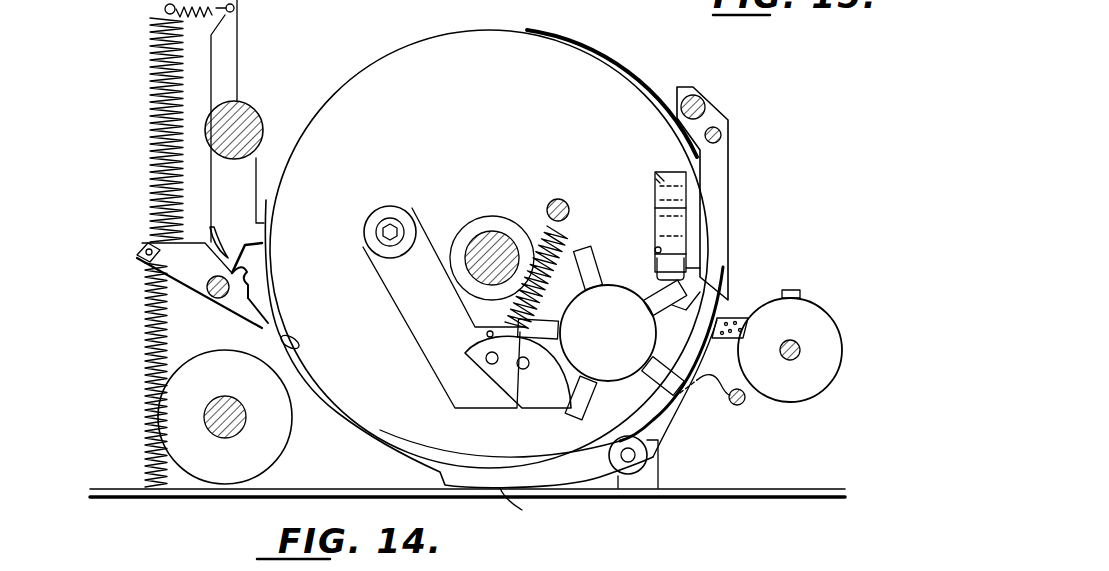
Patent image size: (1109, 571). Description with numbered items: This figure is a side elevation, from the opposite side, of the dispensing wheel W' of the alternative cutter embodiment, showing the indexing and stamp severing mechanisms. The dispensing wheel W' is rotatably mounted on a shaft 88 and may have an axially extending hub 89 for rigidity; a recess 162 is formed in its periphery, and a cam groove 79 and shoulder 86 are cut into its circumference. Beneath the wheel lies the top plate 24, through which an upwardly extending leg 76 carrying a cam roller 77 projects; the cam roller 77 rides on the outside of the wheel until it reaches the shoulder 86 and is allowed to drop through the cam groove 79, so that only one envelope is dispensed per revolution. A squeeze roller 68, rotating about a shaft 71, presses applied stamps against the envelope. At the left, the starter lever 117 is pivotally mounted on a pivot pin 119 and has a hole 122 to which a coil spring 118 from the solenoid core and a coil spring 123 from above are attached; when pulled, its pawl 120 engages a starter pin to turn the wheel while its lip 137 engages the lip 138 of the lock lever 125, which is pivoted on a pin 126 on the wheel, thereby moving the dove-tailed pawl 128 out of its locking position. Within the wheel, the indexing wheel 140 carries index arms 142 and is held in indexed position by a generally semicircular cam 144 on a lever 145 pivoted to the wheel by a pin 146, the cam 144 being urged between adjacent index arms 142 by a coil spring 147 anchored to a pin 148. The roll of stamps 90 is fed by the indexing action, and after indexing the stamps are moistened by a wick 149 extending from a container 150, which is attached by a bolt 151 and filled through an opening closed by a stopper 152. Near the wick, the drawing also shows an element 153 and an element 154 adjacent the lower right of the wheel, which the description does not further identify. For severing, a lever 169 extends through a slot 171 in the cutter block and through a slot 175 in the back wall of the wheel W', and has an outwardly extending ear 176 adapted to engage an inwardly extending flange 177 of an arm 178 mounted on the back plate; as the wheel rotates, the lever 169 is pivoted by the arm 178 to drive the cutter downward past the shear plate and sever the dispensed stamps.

The top plate 24 is at (754, 492).
The dispensing wheel W' is at (496, 239).
The recess 162 is at (357, 428).
The cam groove 79 is at (526, 509).
The shoulder 86 is at (300, 346).
The squeeze roller 68 is at (290, 423).
The shaft 71 is at (236, 406).
The coil spring 123 is at (150, 88).
The coil spring 118 is at (148, 322).
The starter lever 117 is at (196, 277).
The hole 122 is at (150, 249).
The pivot pin 119 is at (208, 296).
The lock lever 125 is at (247, 180).
The pin 126 is at (250, 112).
The lip 138 is at (210, 230).
The pawl 128 is at (258, 241).
The lip 137 is at (245, 279).
The pawl 120 is at (266, 326).
The hub 89 is at (472, 218).
The shaft 88 is at (487, 235).
The pin 146 is at (392, 218).
The lever 145 is at (395, 286).
The cam 144 is at (546, 409).
The coil spring 147 is at (541, 225).
The pin 148 is at (570, 210).
The indexing wheel 140 is at (622, 372).
The index arms 142 is at (548, 322).
The lever 169 is at (660, 212).
The slot 175 is at (657, 176).
The slot 171 is at (655, 250).
The arm 178 is at (722, 165).
The ear 176 is at (682, 268).
The flange 177 is at (700, 292).
The wick 149 is at (738, 318).
The container 150 is at (828, 322).
The bolt 151 is at (791, 352).
The stopper 152 is at (797, 294).
The roll of stamps 90 is at (706, 375).
The ball 154 is at (744, 404).
The guide 153 is at (664, 432).
The cam roller 77 is at (648, 452).
The leg 76 is at (660, 476).